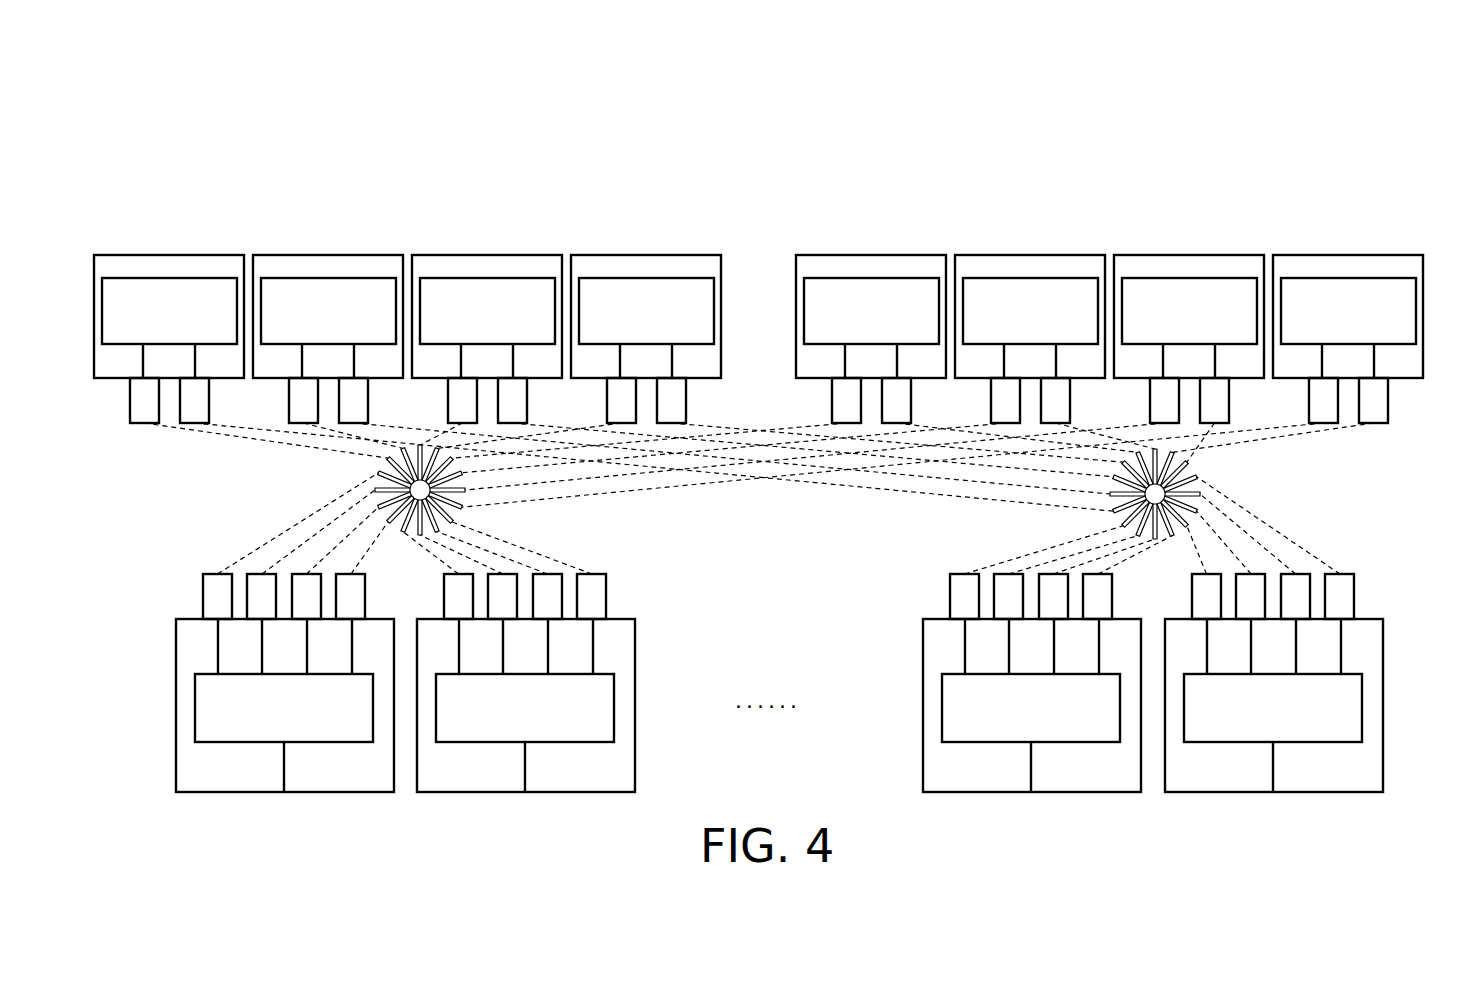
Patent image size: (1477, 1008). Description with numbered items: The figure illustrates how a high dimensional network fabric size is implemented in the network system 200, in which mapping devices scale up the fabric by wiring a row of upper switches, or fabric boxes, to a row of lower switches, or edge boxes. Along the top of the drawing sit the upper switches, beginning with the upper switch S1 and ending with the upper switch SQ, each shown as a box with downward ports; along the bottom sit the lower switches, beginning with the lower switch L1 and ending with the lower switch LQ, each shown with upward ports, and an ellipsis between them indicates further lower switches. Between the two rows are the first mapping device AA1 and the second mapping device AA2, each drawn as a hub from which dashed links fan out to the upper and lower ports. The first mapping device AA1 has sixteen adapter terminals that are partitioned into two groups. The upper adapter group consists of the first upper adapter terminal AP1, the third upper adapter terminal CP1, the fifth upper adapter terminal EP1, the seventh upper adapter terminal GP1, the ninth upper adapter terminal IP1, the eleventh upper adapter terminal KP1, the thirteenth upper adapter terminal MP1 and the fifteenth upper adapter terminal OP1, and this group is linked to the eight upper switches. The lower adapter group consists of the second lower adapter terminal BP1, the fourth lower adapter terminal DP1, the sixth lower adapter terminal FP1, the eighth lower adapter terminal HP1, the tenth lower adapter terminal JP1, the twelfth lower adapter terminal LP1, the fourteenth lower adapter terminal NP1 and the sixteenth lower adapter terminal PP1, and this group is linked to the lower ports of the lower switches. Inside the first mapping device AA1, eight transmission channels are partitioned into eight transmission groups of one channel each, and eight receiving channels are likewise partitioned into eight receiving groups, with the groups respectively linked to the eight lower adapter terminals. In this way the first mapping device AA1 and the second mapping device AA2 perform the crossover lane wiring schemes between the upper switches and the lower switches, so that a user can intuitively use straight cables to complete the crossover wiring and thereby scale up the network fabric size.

The network system 200 is at (218, 104).
The upper switch S1 is at (168, 254).
The upper switch SQ is at (1345, 254).
The first upper adapter terminal AP1 is at (120, 401).
The third upper adapter terminal CP1 is at (280, 401).
The fifth upper adapter terminal EP1 is at (439, 401).
The seventh upper adapter terminal GP1 is at (598, 401).
The ninth upper adapter terminal IP1 is at (825, 401).
The eleventh upper adapter terminal KP1 is at (982, 401).
The thirteenth upper adapter terminal MP1 is at (1139, 401).
The fifteenth upper adapter terminal OP1 is at (1299, 401).
The first mapping device AA1 is at (390, 469).
The second mapping device AA2 is at (1190, 470).
The second lower adapter terminal BP1 is at (204, 583).
The fourth lower adapter terminal DP1 is at (279, 583).
The sixth lower adapter terminal FP1 is at (325, 583).
The eighth lower adapter terminal HP1 is at (372, 583).
The tenth lower adapter terminal JP1 is at (440, 593).
The twelfth lower adapter terminal LP1 is at (482, 583).
The fourteenth lower adapter terminal NP1 is at (526, 583).
The sixteenth lower adapter terminal PP1 is at (604, 583).
The lower switch L1 is at (176, 704).
The lower switch LQ is at (1383, 703).